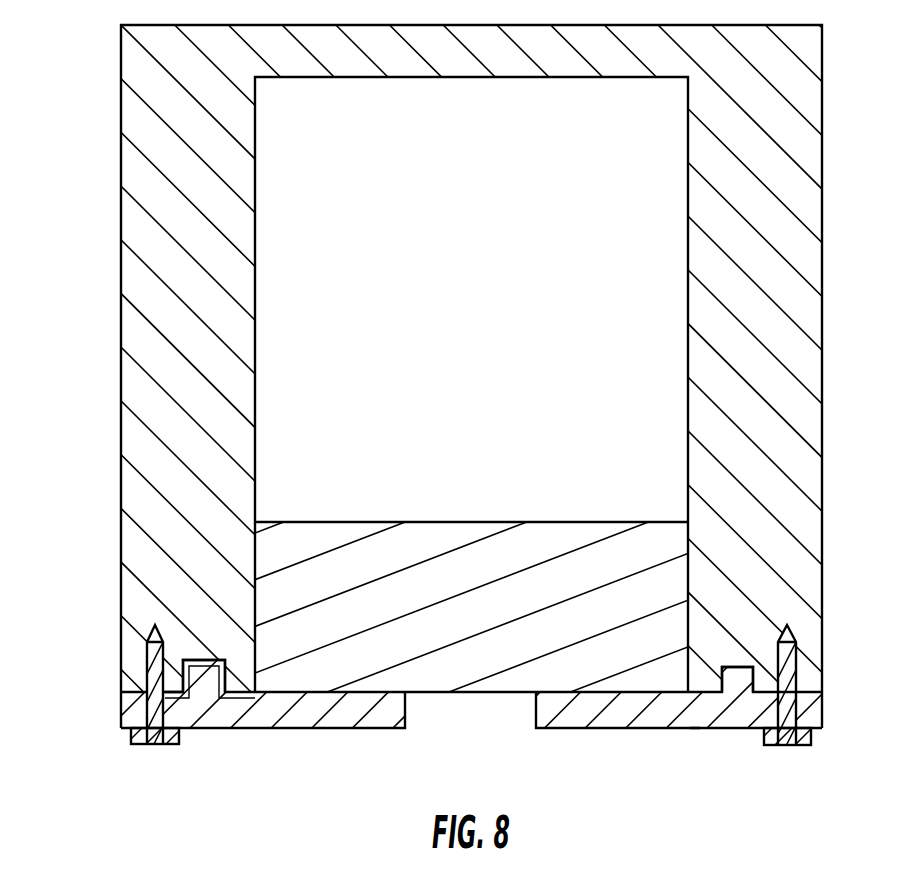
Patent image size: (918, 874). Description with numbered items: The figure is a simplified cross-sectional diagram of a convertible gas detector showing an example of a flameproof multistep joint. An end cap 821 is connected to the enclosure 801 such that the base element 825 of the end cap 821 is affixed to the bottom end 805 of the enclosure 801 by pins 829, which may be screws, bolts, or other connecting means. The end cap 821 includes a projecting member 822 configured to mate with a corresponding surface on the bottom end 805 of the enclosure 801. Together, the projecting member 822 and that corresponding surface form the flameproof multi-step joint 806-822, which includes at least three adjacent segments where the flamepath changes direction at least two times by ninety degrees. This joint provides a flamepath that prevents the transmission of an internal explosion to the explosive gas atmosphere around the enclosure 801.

The enclosure 801 is at (120, 278).
The flameproof multi-step joint 806-822 is at (200, 660).
The bottom end 805 is at (121, 692).
The pins 829 is at (155, 730).
The base element 825 is at (605, 710).
The end cap 821 is at (698, 729).
The projecting member 822 is at (740, 680).